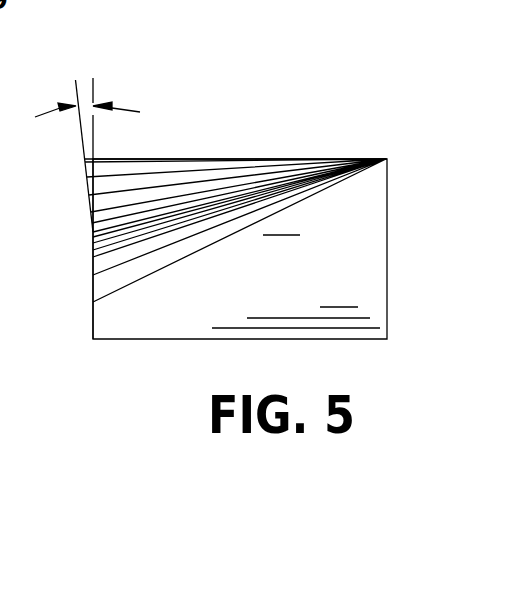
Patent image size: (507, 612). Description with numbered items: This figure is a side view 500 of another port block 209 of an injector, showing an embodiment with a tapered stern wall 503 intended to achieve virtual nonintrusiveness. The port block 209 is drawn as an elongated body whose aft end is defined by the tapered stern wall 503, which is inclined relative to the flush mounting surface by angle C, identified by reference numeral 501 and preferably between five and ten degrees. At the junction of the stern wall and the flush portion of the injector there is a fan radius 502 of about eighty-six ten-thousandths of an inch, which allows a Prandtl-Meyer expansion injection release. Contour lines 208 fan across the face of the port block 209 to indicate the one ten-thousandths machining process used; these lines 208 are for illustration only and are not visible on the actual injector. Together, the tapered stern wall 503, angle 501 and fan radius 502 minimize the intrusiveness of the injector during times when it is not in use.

The side view 500 is at (330, 135).
The angle C 501 is at (155, 105).
The fan radius 502 is at (85, 158).
The tapered stern wall 503 is at (85, 187).
The contour lines 208 is at (193, 182).
The port block 209 is at (353, 243).